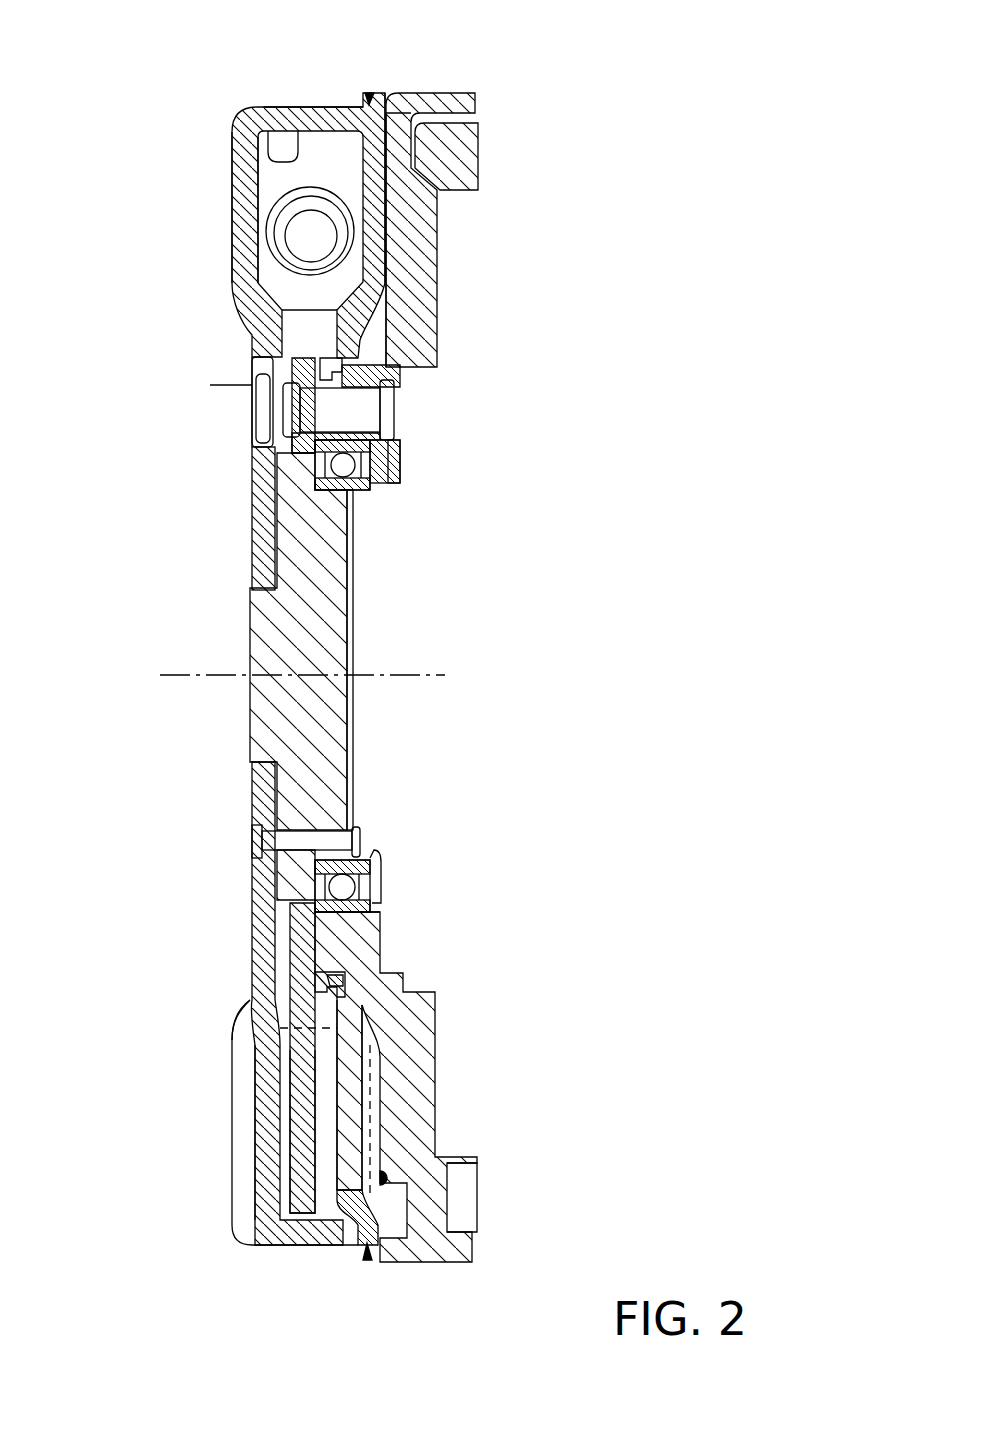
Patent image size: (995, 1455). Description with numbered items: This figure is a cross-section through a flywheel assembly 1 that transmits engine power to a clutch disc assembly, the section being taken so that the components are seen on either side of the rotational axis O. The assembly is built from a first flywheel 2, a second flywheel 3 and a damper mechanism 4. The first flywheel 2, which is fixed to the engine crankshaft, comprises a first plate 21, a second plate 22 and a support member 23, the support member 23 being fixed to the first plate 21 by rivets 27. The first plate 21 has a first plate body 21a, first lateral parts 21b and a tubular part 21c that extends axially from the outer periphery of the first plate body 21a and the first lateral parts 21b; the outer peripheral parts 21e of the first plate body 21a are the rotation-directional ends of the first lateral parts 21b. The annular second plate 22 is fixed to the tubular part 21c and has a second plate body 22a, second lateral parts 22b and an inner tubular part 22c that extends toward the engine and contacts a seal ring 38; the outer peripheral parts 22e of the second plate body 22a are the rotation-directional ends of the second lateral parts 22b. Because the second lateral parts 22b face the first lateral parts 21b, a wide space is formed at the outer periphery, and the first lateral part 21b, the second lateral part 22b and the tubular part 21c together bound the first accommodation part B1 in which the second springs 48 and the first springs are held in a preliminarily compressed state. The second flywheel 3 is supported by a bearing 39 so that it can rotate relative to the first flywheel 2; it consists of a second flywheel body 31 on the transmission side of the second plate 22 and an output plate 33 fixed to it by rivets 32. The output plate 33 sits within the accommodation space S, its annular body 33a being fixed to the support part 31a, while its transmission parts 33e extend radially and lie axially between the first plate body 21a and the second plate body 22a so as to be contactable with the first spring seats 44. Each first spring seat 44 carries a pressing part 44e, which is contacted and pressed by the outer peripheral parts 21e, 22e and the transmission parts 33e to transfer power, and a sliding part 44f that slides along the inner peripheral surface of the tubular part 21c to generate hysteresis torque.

The flywheel assembly 1 is at (529, 118).
The first flywheel 2 is at (236, 120).
The second flywheel 3 is at (486, 139).
The damper mechanism 4 is at (298, 137).
The first plate 21 is at (230, 624).
The first plate body 21a is at (262, 1000).
The first lateral part 21b is at (242, 193).
The tubular part 21c is at (304, 117).
The outer peripheral part 21e is at (267, 1165).
The second plate 22 is at (450, 677).
The second plate body 22a is at (342, 1003).
The second lateral part 22b is at (380, 203).
The inner tubular part 22c is at (375, 323).
The outer peripheral part 22e is at (345, 1125).
The support member 23 is at (287, 518).
The rivet 27 is at (333, 840).
The second flywheel body 31 is at (438, 1038).
The support part 31a is at (380, 436).
The rivet 32 is at (368, 412).
The output plate 33 is at (283, 365).
The body 33a is at (252, 395).
The transmission part 33e is at (308, 1095).
The seal ring 38 is at (350, 373).
The bearing 39 is at (372, 472).
The first spring seat 44 is at (254, 155).
The pressing part 44e is at (327, 1185).
The sliding part 44f is at (315, 167).
The second spring 48 is at (282, 228).
The first accommodation part B1 is at (270, 129).
The accommodation space S is at (287, 1192).
The axis O is at (302, 678).